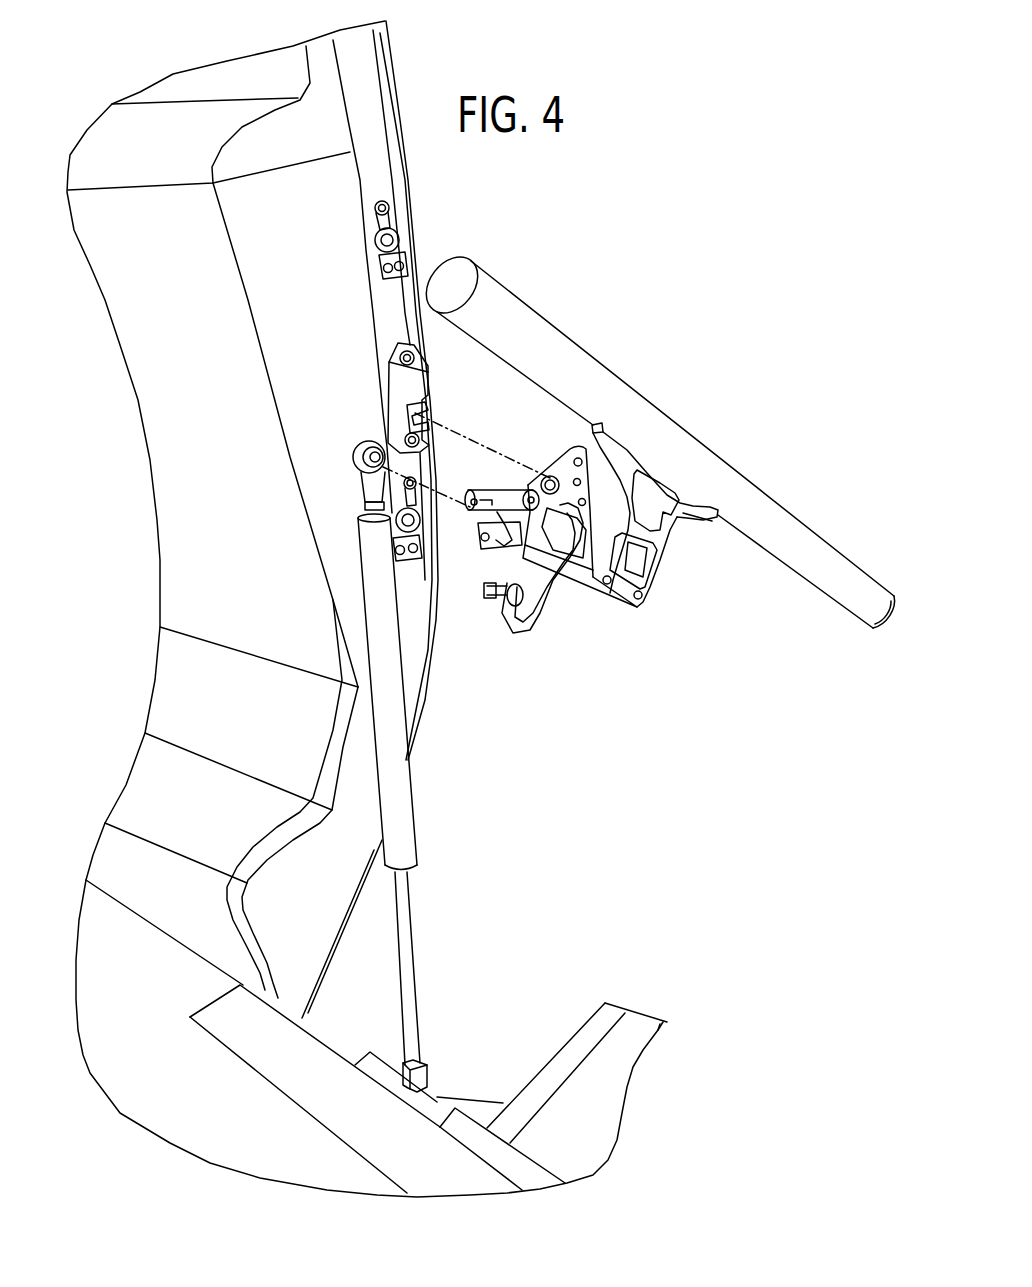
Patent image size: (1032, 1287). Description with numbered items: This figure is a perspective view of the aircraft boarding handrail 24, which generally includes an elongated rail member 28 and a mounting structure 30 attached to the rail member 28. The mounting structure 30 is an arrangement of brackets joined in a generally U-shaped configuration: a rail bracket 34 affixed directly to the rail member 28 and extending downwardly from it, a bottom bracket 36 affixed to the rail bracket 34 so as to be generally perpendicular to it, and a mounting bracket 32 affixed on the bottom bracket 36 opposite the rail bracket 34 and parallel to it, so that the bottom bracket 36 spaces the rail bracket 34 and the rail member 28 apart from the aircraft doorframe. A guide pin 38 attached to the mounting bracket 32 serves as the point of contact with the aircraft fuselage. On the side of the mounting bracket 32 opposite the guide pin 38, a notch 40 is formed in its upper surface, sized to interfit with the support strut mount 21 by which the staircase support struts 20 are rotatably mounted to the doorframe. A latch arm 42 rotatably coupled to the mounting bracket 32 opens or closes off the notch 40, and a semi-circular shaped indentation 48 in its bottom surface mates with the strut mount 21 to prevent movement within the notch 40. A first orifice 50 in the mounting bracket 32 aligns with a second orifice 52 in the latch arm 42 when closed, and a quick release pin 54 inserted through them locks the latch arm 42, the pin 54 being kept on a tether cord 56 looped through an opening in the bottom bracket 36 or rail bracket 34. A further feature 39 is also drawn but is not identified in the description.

The staircase support struts 20 is at (412, 828).
The support strut mount 21 is at (353, 462).
The aircraft boarding handrail 24 is at (692, 363).
The elongated rail member 28 is at (823, 548).
The mounting structure 30 is at (672, 593).
The mounting bracket 32 is at (585, 473).
The rail bracket 34 is at (680, 520).
The bottom bracket 36 is at (586, 597).
The guide pin 38 is at (552, 473).
The pivot axis 39 is at (550, 472).
The notch 40 is at (488, 520).
The latch arm 42 is at (500, 489).
The semi-circular shaped indentation 48 is at (510, 543).
The first orifice 50 is at (475, 557).
The second orifice 52 is at (474, 497).
The quick release pin 54 is at (520, 620).
The tether cord 56 is at (533, 627).